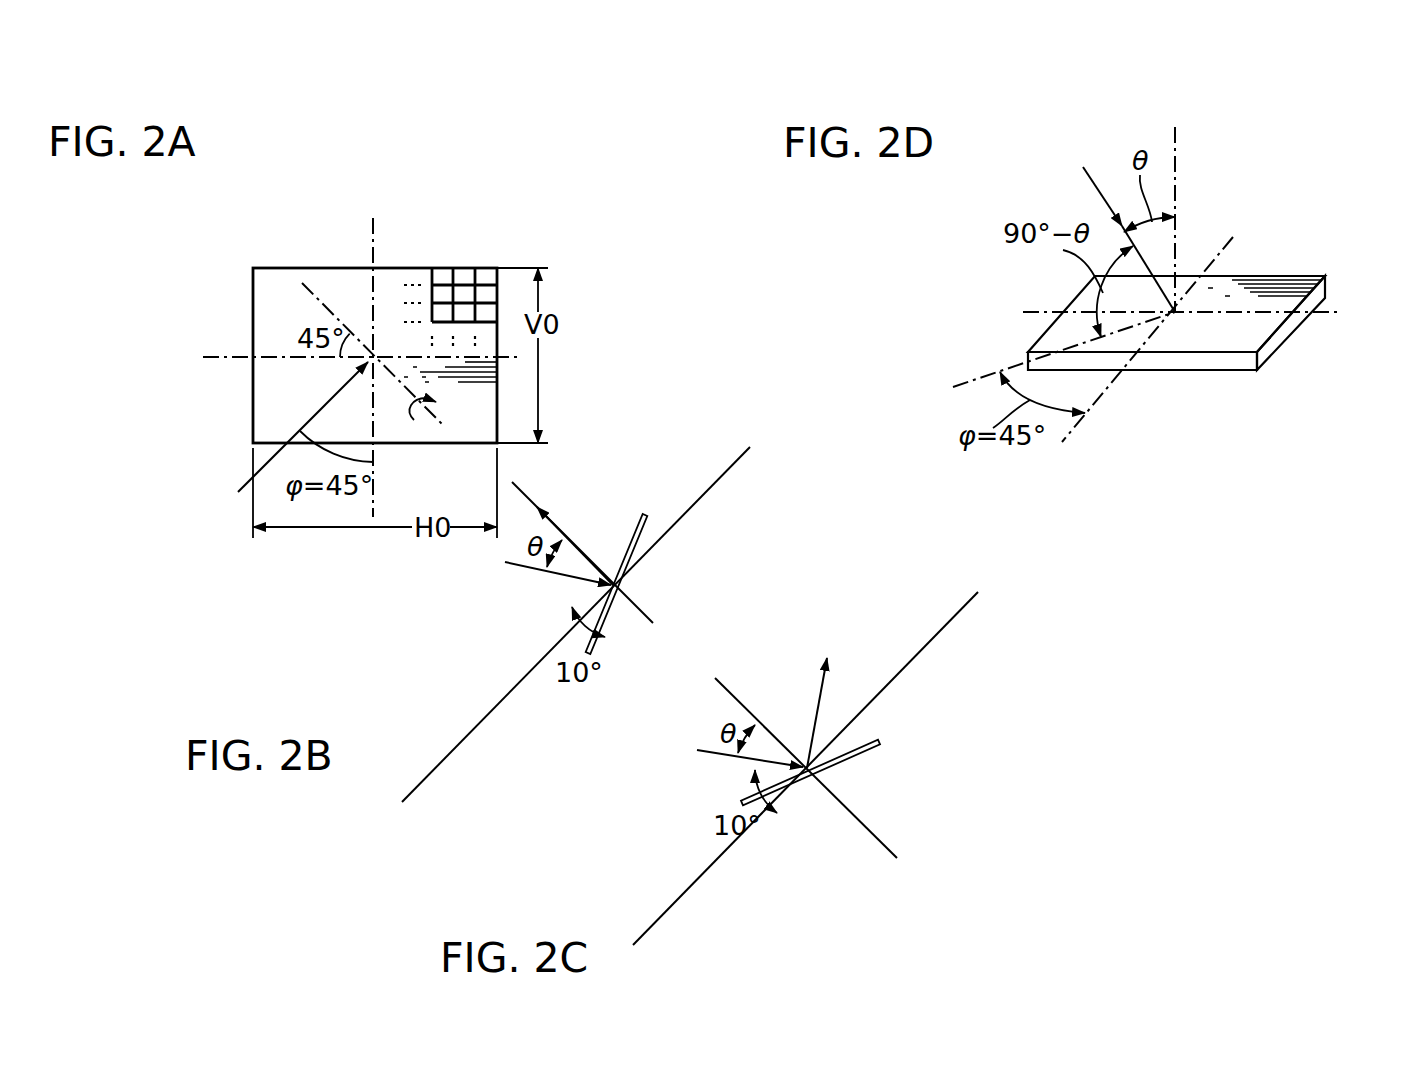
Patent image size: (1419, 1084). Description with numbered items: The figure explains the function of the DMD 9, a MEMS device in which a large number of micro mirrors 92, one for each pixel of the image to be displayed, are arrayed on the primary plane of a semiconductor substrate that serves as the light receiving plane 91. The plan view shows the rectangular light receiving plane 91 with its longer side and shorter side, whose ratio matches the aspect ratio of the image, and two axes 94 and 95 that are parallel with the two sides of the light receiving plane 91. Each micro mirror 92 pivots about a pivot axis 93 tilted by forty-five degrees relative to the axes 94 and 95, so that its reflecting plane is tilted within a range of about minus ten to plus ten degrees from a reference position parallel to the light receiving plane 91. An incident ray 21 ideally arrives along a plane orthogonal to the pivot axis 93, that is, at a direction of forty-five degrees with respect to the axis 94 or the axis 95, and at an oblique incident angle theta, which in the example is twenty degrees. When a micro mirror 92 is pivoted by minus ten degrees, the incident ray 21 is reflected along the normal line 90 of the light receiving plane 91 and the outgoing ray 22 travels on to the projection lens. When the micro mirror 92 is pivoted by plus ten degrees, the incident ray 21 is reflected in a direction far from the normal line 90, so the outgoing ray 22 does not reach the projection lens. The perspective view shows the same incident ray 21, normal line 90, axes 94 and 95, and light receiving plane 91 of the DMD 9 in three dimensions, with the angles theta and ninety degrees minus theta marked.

In FIG. 2A, the DMD 9 is at (249, 289).
In FIG. 2D, the DMD 9 is at (1236, 362).
In FIG. 2A, the incident ray 21 is at (240, 492).
In FIG. 2B, the incident ray 21 is at (507, 565).
In FIG. 2C, the incident ray 21 is at (700, 752).
In FIG. 2D, the incident ray 21 is at (1088, 176).
In FIG. 2B, the outgoing ray 22 is at (556, 525).
In FIG. 2C, the outgoing ray 22 is at (823, 697).
In FIG. 2B, the normal line 90 is at (520, 492).
In FIG. 2C, the normal line 90 is at (722, 692).
In FIG. 2D, the normal line 90 is at (1180, 172).
In FIG. 2B, the light receiving plane 91 is at (472, 730).
In FIG. 2C, the light receiving plane 91 is at (697, 883).
In FIG. 2D, the light receiving plane 91 is at (1247, 334).
In FIG. 2A, the micro mirror 92 is at (485, 273).
In FIG. 2B, the micro mirror 92 is at (637, 518).
In FIG. 2C, the micro mirror 92 is at (865, 750).
In FIG. 2A, the pivot axis 93 is at (321, 300).
In FIG. 2A, the axis 94 is at (223, 357).
In FIG. 2D, the axis 94 is at (1322, 313).
In FIG. 2A, the axis 95 is at (376, 231).
In FIG. 2D, the axis 95 is at (1243, 238).